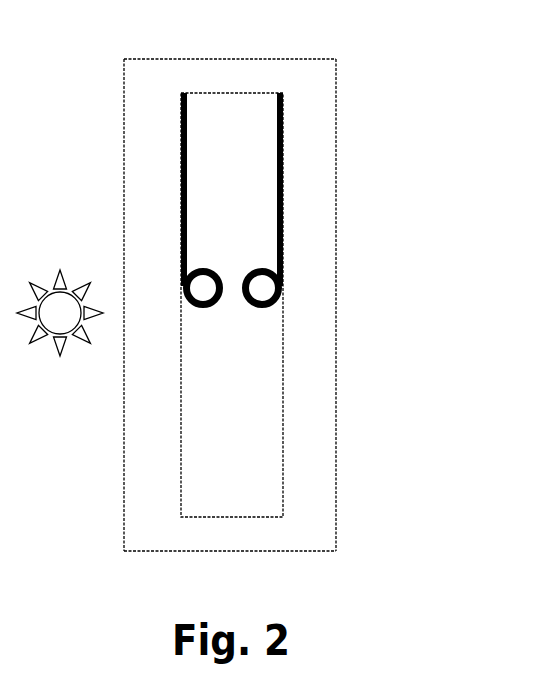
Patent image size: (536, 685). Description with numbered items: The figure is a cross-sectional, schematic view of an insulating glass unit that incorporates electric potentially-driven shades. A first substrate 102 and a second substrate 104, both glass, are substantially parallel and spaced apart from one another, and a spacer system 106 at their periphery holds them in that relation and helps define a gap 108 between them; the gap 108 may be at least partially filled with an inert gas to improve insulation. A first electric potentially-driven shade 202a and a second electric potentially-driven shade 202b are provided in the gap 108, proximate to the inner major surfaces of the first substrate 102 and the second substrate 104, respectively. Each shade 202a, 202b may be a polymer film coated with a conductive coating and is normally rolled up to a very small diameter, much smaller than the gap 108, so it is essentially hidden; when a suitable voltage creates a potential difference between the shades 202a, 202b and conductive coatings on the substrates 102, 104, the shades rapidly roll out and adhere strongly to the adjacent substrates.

The first substrate 102 is at (123, 124).
The second substrate 104 is at (336, 124).
The spacer system 106 is at (233, 59).
The gap 108 is at (250, 418).
The first electric potentially-driven shade 202a is at (202, 307).
The second electric potentially-driven shade 202b is at (262, 307).